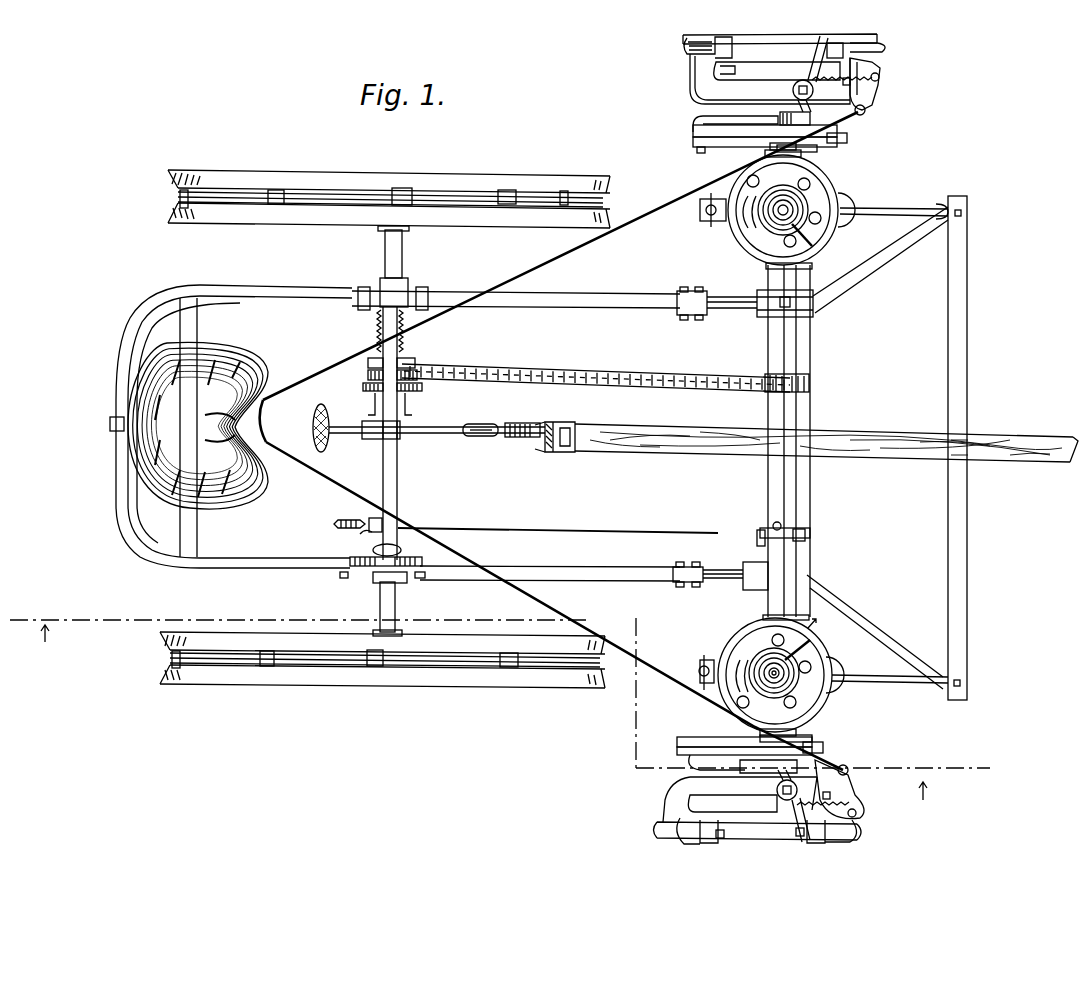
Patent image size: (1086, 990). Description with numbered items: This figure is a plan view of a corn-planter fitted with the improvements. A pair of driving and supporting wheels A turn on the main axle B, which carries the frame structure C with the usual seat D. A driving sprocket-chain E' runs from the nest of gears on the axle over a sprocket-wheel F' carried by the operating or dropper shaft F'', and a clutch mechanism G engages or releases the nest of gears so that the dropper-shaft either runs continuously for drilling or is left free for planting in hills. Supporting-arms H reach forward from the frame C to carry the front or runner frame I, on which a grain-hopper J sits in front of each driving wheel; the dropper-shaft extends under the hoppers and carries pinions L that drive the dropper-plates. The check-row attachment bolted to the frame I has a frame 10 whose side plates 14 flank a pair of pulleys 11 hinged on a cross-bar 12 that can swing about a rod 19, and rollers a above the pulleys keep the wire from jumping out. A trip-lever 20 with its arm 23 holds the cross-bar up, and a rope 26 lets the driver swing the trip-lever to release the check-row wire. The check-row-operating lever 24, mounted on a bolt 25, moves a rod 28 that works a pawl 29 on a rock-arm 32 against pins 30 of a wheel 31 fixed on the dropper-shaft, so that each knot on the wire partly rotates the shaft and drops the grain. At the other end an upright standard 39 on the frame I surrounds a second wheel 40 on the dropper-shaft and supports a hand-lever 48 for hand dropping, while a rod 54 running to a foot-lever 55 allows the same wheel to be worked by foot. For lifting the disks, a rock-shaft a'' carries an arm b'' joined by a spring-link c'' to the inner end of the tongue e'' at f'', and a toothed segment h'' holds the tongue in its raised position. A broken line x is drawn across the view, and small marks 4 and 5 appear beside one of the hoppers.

The driving and supporting wheels A is at (432, 182).
The main axle B is at (402, 256).
The frame structure C is at (606, 294).
The seat D is at (258, 362).
The rope or flexible connection 26 is at (488, 290).
The driving sprocket-chain E' is at (596, 365).
The clutch mechanism G is at (405, 404).
The sprocket-wheel F' is at (618, 370).
The operating or dropper shaft F'' is at (782, 313).
The supporting-arms H is at (720, 305).
The front or runner frame I is at (948, 330).
The grain-hopper J is at (822, 180).
The pinions L is at (812, 266).
The tongue e'' is at (826, 436).
The bracket attachment point f'' is at (562, 420).
The spring-link c'' is at (472, 422).
The arm b'' is at (377, 439).
The rock-shaft a'' is at (390, 461).
The foot-lever 55 is at (354, 520).
The toothed segment h'' is at (386, 554).
The rod 54 is at (643, 526).
The wheel 40 is at (760, 533).
The hand-lever 48 is at (780, 525).
The upright standard 39 is at (805, 533).
The section line x is at (500, 696).
The cross-bar 12 is at (752, 44).
The pulleys 11 is at (687, 47).
The frame 10 is at (756, 438).
The rod 19 is at (772, 62).
The side plates 14 is at (738, 68).
The check-row-operating lever 24 is at (799, 439).
The bolt 25 is at (813, 90).
The arm 23 is at (876, 88).
The trip-lever 20 is at (865, 111).
The rod 28 is at (732, 118).
The rock-arm 32 is at (693, 130).
The pawl 29 is at (728, 147).
The pins 30 is at (847, 137).
The wheel 31 is at (830, 150).
The rollers a is at (760, 831).
The arrow 4 is at (812, 617).
The hub 5 is at (806, 690).